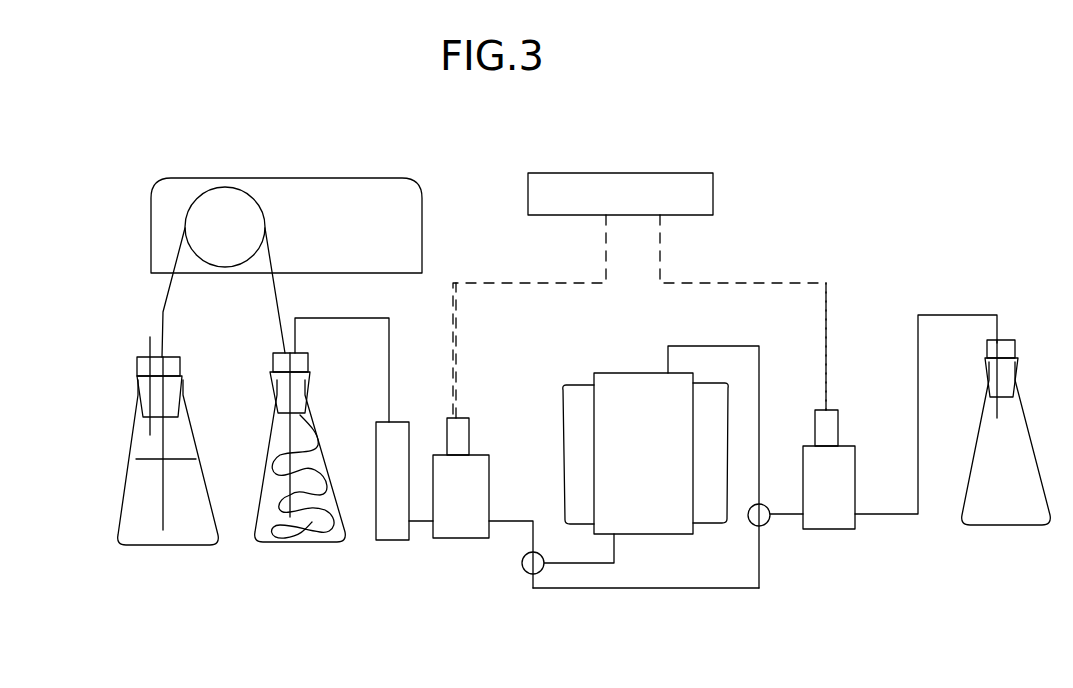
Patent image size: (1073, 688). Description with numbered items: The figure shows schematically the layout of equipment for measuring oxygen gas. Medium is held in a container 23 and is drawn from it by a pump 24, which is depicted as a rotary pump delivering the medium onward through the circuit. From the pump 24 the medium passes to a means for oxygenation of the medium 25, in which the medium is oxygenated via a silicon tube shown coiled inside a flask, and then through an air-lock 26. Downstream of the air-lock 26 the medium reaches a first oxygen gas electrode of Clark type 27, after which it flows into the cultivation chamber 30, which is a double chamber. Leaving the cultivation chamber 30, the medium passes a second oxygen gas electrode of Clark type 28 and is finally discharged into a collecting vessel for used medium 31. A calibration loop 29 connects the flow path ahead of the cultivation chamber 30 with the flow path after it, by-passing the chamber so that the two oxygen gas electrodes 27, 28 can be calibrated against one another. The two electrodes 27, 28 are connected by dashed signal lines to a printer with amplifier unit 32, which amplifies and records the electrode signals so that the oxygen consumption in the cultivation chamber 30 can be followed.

The container 23 is at (182, 545).
The pump 24 is at (312, 178).
The means for oxygenation of the medium 25 is at (303, 543).
The air-lock 26 is at (392, 540).
The oxygen gas electrode of Clark type 27 is at (472, 538).
The oxygen gas electrode of Clark type 28 is at (836, 529).
The calibration loop 29 is at (652, 588).
The cultivation chamber 30 is at (633, 381).
The collecting vessel for used medium 31 is at (1007, 525).
The printer with amplifier unit 32 is at (620, 173).